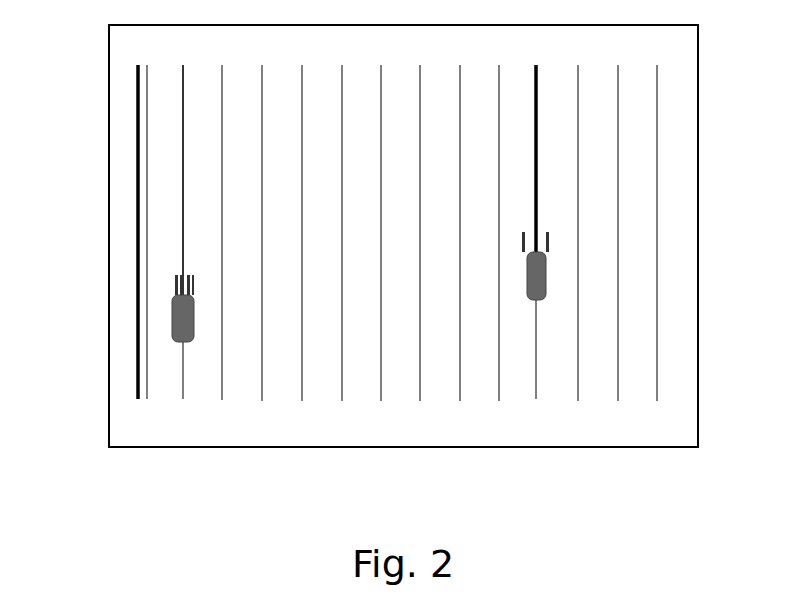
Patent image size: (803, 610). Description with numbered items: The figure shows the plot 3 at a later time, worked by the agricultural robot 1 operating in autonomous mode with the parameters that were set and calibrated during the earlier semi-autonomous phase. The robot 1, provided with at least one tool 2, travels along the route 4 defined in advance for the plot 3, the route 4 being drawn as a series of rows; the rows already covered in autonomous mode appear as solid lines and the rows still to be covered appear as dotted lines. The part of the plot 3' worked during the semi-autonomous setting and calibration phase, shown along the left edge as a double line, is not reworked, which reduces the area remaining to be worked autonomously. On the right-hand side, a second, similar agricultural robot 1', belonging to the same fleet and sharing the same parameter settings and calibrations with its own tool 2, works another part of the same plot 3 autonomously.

The agricultural robot 1 is at (110, 340).
The other similar agricultural robot 1' is at (647, 282).
The tool 2 is at (178, 294).
The plot 3 is at (403, 280).
The part of the plot 3' is at (127, 298).
The route 4 is at (536, 143).